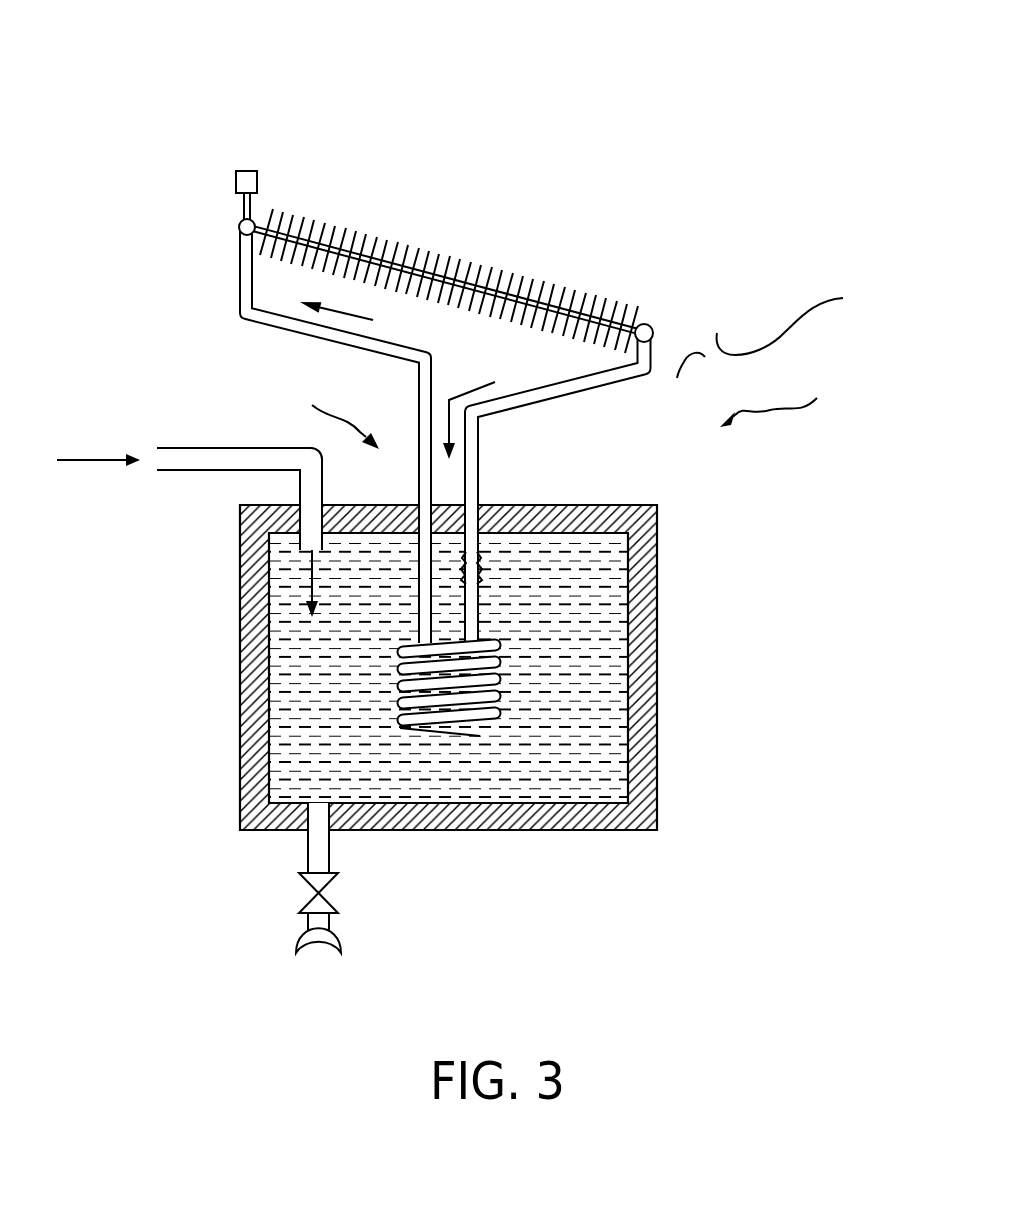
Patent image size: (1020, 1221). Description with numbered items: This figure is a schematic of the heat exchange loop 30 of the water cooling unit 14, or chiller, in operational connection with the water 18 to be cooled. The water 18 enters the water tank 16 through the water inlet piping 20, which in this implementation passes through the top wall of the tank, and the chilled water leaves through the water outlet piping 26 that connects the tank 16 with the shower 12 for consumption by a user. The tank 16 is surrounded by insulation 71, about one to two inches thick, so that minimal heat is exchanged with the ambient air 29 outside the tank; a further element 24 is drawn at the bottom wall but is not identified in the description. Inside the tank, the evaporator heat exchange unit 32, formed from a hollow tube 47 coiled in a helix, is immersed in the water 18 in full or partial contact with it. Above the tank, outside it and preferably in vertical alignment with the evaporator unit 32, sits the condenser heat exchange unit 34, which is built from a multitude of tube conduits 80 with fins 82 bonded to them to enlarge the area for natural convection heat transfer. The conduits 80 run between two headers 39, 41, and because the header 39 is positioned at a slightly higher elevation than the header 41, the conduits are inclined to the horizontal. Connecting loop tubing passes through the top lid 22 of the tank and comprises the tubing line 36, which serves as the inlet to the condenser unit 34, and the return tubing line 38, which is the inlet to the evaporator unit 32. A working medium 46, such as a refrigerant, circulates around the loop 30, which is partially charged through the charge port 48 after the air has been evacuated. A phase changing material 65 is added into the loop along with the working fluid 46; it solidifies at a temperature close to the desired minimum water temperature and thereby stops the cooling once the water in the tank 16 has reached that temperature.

The shower 12 is at (318, 942).
The water cooling unit 14 is at (786, 401).
The water tank 16 is at (655, 640).
The water 18 is at (80, 460).
The water inlet piping 20 is at (220, 447).
The top lid 22 is at (492, 515).
The tank bottom 24 is at (382, 815).
The water outlet piping 26 is at (308, 845).
The ambient air 29 is at (780, 328).
The heat exchange loop 30 is at (335, 408).
The evaporator heat exchange unit 32 is at (483, 718).
The condenser heat exchange unit 34 is at (446, 210).
The tubing line 36 is at (238, 303).
The return tubing line 38 is at (590, 386).
The header 39 is at (240, 227).
The header 41 is at (650, 322).
The working medium 46 is at (530, 397).
The hollow tube 47 is at (498, 650).
The charge port 48 is at (245, 171).
The phase changing material 65 is at (478, 570).
The insulation 71 is at (635, 812).
The tube conduits 80 is at (306, 226).
The fins 82 is at (490, 265).